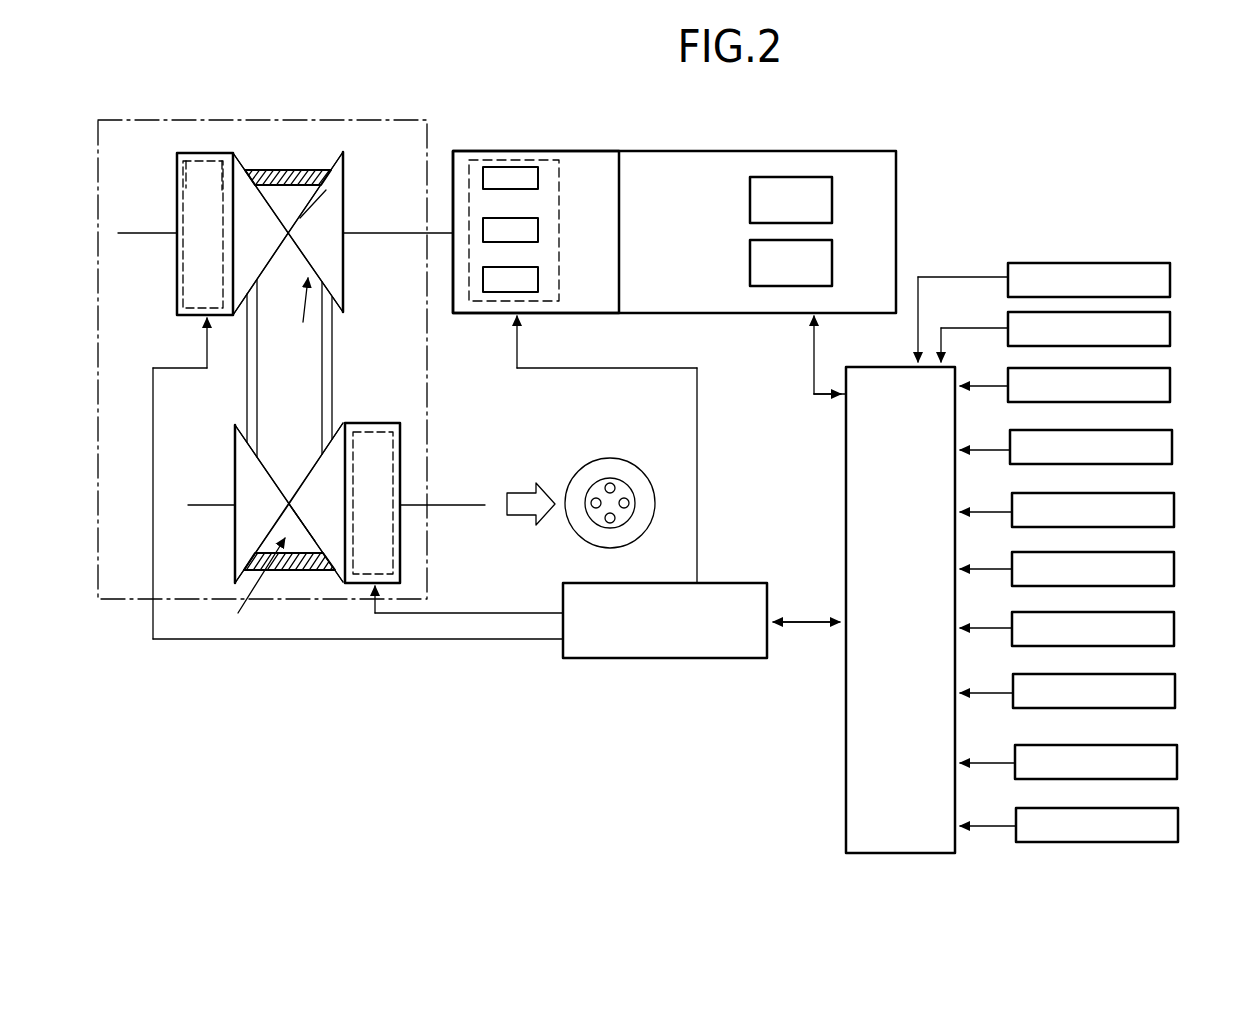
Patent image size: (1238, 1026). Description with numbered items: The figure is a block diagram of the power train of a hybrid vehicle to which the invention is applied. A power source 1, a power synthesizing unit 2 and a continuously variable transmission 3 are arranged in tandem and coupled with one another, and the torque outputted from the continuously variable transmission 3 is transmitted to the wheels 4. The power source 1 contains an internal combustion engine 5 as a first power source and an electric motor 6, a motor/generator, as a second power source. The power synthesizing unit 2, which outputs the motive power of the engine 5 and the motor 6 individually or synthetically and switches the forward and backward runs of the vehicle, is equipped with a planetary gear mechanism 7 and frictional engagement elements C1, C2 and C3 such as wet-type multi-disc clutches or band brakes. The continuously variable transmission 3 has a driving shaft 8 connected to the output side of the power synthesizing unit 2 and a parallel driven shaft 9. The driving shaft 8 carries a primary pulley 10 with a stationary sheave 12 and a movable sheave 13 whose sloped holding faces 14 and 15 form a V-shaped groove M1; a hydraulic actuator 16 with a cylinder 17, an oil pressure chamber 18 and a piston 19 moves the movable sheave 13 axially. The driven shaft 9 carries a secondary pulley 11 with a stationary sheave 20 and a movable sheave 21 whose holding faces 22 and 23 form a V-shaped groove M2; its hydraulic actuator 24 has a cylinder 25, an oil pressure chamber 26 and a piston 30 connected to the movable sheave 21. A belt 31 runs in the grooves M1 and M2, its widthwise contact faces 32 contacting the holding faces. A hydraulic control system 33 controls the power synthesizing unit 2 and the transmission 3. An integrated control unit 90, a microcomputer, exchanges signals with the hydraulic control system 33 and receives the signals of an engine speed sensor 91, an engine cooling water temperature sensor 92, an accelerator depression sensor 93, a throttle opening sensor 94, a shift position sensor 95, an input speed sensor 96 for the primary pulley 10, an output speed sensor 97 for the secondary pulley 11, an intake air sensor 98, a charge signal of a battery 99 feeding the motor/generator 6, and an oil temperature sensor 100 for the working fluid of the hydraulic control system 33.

The power source 1 is at (900, 197).
The power synthesizing unit 2 is at (604, 148).
The continuously variable transmission 3 is at (432, 385).
The wheels 4 is at (612, 466).
The internal combustion engine 5 is at (822, 201).
The electric motor 6 is at (822, 266).
The planetary gear mechanism 7 is at (562, 206).
The driving shaft 8 is at (382, 233).
The driven shaft 9 is at (218, 505).
The primary pulley 10 is at (358, 153).
The secondary pulley 11 is at (228, 556).
The stationary sheave 12 is at (340, 262).
The movable sheave 13 is at (247, 270).
The holding face 14 is at (328, 170).
The holding face 15 is at (245, 172).
The hydraulic actuator 16 is at (172, 190).
The cylinder 17 is at (198, 308).
The oil pressure chamber 18 is at (198, 188).
The piston 19 is at (224, 188).
The stationary sheave 20 is at (247, 458).
The movable sheave 21 is at (330, 468).
The holding face 22 is at (272, 482).
The holding face 23 is at (302, 468).
The hydraulic actuator 24 is at (378, 420).
The cylinder 25 is at (400, 455).
The oil pressure chamber 26 is at (372, 523).
The piston 30 is at (364, 586).
The belt 31 is at (302, 366).
The contact faces 32 is at (330, 180).
The hydraulic control system 33 is at (663, 650).
The integrated control unit 90 is at (855, 780).
The engine speed sensor 91 is at (1170, 277).
The engine cooling water temperature sensor 92 is at (1170, 328).
The accelerator depression sensor 93 is at (1170, 386).
The throttle opening sensor 94 is at (1172, 450).
The shift position sensor 95 is at (1174, 512).
The input speed sensor 96 is at (1174, 569).
The output speed sensor 97 is at (1174, 628).
The intake air sensor 98 is at (1175, 693).
The battery 99 is at (1177, 763).
The oil temperature sensor 100 is at (1178, 826).
The V-shaped groove M1 is at (301, 313).
The V-shaped groove M2 is at (261, 588).
The frictional engagement element C1 is at (510, 182).
The frictional engagement element C2 is at (527, 229).
The frictional engagement element C3 is at (527, 280).